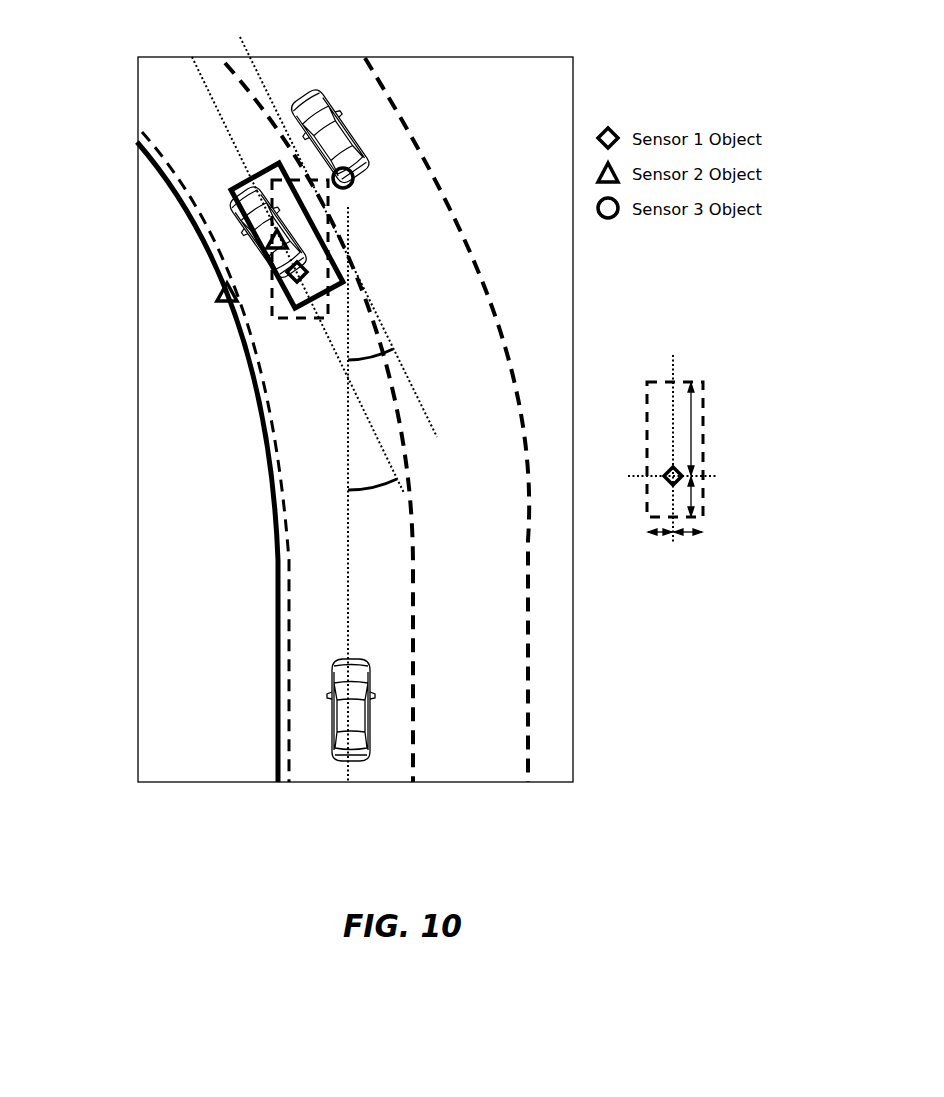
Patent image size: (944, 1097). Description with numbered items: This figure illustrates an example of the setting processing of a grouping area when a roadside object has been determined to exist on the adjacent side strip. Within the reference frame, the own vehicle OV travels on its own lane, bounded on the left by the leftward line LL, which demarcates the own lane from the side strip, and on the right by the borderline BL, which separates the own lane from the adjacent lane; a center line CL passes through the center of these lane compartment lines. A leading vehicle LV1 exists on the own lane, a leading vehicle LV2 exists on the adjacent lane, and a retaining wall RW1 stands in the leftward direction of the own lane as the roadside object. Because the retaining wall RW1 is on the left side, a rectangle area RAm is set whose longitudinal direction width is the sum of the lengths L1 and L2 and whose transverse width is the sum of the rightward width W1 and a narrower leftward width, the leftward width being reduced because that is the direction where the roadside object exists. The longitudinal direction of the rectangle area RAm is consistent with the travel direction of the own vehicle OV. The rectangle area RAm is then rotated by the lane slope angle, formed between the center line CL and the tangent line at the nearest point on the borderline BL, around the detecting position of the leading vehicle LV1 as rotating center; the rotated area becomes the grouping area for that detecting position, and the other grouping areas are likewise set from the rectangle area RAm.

The retaining wall RW1 is at (256, 400).
The leftward line LL is at (288, 722).
The borderline BL is at (412, 722).
The center line CL is at (347, 572).
The rectangle area RAm is at (273, 317).
The leading vehicle LV1 is at (242, 218).
The leading vehicle LV2 is at (333, 110).
The own vehicle OV is at (333, 715).
The longitudinal direction width L1 is at (692, 503).
The longitudinal direction width L2 is at (692, 432).
The rightward transverse width W1 is at (688, 538).